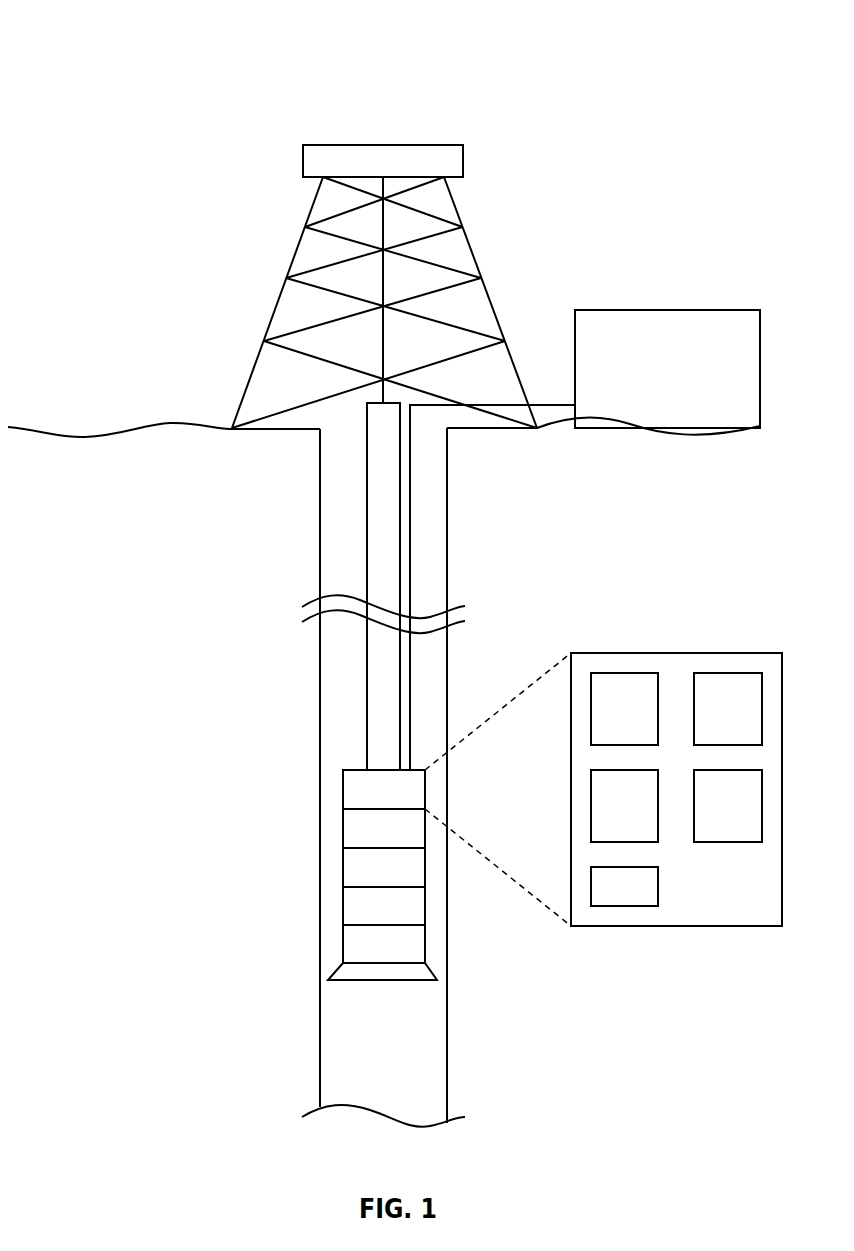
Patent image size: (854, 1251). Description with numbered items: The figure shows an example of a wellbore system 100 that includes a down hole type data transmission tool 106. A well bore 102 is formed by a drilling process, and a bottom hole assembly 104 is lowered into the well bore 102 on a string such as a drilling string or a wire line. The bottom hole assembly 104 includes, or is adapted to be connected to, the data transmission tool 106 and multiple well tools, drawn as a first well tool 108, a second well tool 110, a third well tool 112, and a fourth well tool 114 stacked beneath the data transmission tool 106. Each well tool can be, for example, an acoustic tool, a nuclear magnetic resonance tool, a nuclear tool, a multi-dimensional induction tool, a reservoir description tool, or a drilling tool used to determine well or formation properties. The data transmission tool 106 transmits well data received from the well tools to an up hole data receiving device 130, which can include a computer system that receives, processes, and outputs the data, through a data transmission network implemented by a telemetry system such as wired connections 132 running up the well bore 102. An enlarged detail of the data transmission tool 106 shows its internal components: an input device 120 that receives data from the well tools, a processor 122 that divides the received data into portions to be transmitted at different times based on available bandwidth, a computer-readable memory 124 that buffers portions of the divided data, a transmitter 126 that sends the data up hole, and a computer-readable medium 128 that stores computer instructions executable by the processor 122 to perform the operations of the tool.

The wellbore system 100 is at (110, 92).
The well bore 102 is at (441, 943).
The bottom hole assembly 104 is at (333, 875).
The data transmission tool 106 is at (362, 802).
The first well tool 108 is at (362, 841).
The second well tool 110 is at (362, 879).
The third well tool 112 is at (362, 917).
The fourth well tool 114 is at (384, 948).
The input device 120 is at (604, 719).
The processor 122 is at (707, 719).
The computer-readable memory 124 is at (604, 815).
The transmitter 126 is at (707, 815).
The computer-readable medium 128 is at (604, 896).
The up hole data receiving device 130 is at (646, 382).
The wired connections 132 is at (412, 520).